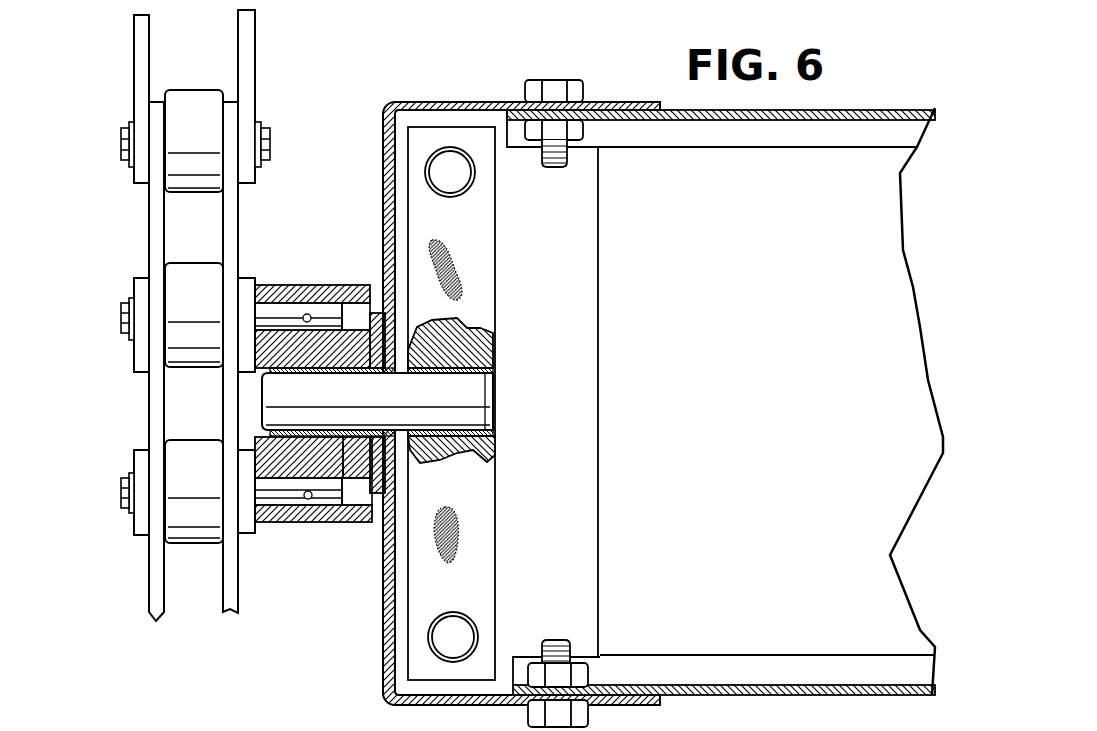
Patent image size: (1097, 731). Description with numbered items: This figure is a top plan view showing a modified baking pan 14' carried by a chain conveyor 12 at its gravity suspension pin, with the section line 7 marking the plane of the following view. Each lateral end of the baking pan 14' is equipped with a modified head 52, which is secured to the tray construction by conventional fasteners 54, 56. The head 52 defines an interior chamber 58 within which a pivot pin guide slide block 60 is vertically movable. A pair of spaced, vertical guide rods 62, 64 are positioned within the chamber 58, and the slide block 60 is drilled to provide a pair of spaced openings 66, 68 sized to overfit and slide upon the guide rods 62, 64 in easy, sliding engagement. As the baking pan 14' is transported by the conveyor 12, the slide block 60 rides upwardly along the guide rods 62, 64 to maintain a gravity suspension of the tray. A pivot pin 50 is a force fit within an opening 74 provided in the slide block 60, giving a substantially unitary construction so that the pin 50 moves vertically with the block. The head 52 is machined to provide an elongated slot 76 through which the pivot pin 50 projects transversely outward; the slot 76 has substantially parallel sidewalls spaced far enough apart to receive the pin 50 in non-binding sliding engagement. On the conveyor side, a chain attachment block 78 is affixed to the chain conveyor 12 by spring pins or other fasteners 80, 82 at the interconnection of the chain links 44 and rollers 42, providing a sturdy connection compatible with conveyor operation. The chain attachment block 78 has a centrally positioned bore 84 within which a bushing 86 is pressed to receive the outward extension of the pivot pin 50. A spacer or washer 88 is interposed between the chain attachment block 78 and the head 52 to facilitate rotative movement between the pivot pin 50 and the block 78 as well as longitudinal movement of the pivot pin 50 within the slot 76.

The section line 7- 7 is at (116, 54).
The chain conveyor 12 is at (254, 67).
The modified baking pan 14' is at (725, 419).
The rollers 42 is at (190, 445).
The chain links 44 is at (137, 410).
The pivot pin 50 is at (457, 382).
The head 52 is at (388, 664).
The fastener 54 is at (580, 94).
The fastener 56 is at (583, 675).
The interior chamber 58 is at (503, 167).
The slide block 60 is at (423, 587).
The guide rod 62 is at (462, 177).
The guide rod 64 is at (463, 642).
The opening 66 is at (458, 194).
The opening 68 is at (468, 620).
The opening 74 is at (482, 440).
The elongated slot 76 is at (398, 437).
The chain attachment block 78 is at (282, 522).
The spring pin 80 is at (268, 312).
The spring pin 82 is at (315, 523).
The bore 84 is at (299, 457).
The bushing 86 is at (347, 443).
The spacer 88 is at (377, 310).